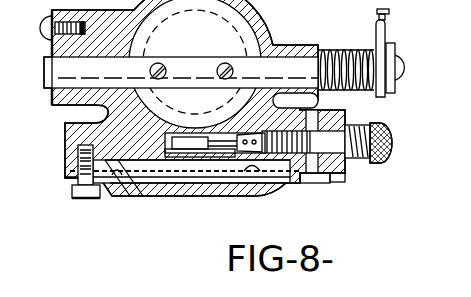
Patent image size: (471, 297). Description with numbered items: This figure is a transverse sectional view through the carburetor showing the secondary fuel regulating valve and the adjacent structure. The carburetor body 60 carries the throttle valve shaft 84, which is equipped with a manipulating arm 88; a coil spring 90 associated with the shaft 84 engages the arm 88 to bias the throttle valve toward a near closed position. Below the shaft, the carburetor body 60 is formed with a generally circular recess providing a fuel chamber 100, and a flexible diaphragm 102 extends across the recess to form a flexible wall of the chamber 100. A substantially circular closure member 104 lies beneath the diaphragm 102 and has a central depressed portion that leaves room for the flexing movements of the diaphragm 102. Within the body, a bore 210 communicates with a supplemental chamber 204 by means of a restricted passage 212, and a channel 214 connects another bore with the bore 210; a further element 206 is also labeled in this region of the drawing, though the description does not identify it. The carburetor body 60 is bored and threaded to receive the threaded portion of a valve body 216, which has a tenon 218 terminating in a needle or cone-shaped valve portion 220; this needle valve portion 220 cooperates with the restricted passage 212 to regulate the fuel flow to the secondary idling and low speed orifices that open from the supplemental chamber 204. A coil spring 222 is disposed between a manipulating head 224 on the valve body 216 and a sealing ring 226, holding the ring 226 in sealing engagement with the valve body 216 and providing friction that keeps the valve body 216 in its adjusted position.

The carburetor body 60 is at (268, 17).
The throttle valve shaft 84 is at (197, 42).
The manipulating arm 88 is at (383, 12).
The coil spring 90 is at (362, 52).
The fuel chamber 100 is at (118, 186).
The diaphragm 102 is at (123, 192).
The closure member 104 is at (324, 174).
The supplemental chamber 204 is at (173, 140).
The valve seat 206 is at (118, 176).
The bore 210 is at (240, 130).
The restricted passage 212 is at (125, 170).
The channel 214 is at (250, 172).
The valve body 216 is at (322, 112).
The tenon 218 is at (233, 136).
The needle valve portion 220 is at (212, 183).
The coil spring 222 is at (358, 155).
The manipulating head 224 is at (387, 151).
The sealing ring 226 is at (338, 176).